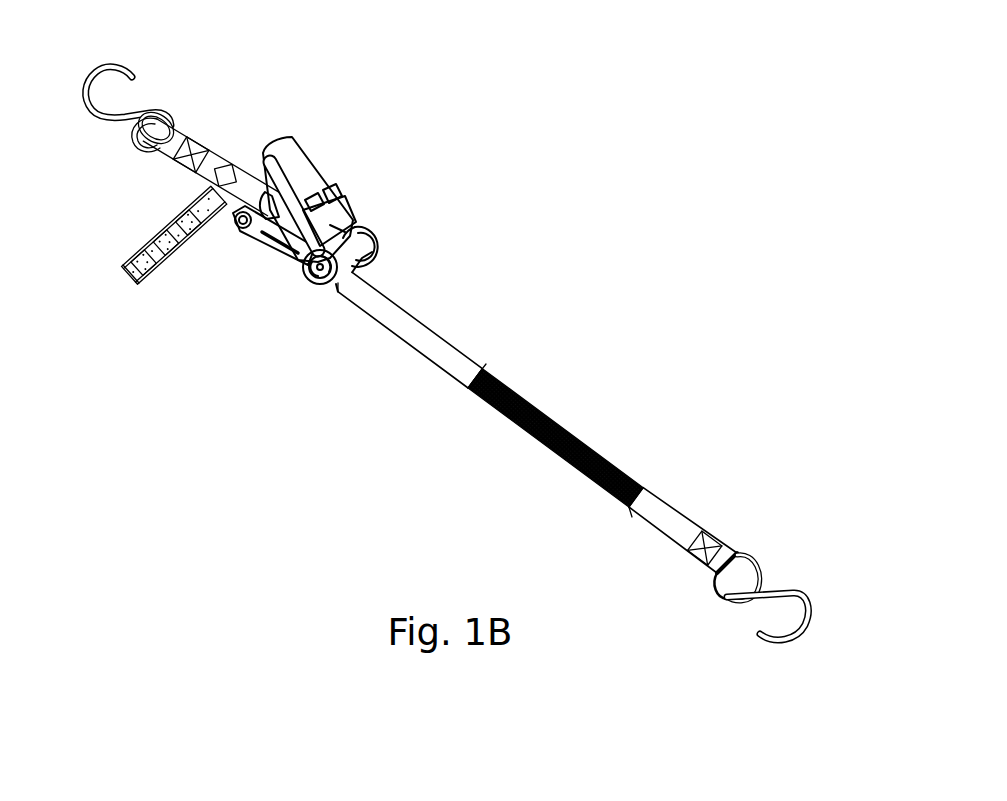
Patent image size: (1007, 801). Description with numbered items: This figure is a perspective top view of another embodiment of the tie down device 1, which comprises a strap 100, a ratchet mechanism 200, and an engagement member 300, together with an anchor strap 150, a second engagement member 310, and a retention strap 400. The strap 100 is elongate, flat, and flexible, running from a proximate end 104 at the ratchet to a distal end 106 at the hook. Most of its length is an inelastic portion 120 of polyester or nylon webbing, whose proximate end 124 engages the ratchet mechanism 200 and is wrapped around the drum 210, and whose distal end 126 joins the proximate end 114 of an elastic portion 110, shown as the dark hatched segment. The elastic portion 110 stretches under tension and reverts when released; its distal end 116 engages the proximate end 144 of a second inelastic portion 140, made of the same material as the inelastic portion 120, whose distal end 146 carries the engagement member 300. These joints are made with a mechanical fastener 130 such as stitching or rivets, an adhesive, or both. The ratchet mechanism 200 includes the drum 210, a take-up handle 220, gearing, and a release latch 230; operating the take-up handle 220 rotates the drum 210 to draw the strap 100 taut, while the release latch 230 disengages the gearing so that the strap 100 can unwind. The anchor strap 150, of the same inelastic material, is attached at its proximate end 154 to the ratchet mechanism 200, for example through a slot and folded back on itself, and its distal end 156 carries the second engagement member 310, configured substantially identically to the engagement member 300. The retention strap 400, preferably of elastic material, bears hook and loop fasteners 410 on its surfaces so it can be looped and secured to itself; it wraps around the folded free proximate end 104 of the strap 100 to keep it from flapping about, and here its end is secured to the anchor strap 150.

The tie down device 1 is at (422, 153).
The strap 100 is at (477, 333).
The proximate end 104 is at (380, 260).
The distal end 106 is at (715, 577).
The elastic portion 110 is at (530, 440).
The proximate end 114 is at (483, 377).
The distal end 116 is at (640, 503).
The inelastic portion 120 is at (433, 317).
The proximate end 124 is at (337, 283).
The distal end 126 is at (478, 373).
The mechanical fastener 130 is at (470, 383).
The second inelastic portion 140 is at (680, 520).
The proximate end 144 is at (633, 517).
The distal end 146 is at (737, 557).
The anchor strap 150 is at (182, 173).
The proximate end 154 is at (263, 197).
The distal end 156 is at (137, 141).
The ratchet mechanism 200 is at (265, 248).
The drum 210 is at (380, 240).
The take-up handle 220 is at (300, 170).
The release latch 230 is at (313, 293).
The engagement member 300 is at (805, 593).
The second engagement member 310 is at (90, 74).
The retention strap 400 is at (160, 240).
The hook and loop fasteners 410 is at (137, 284).